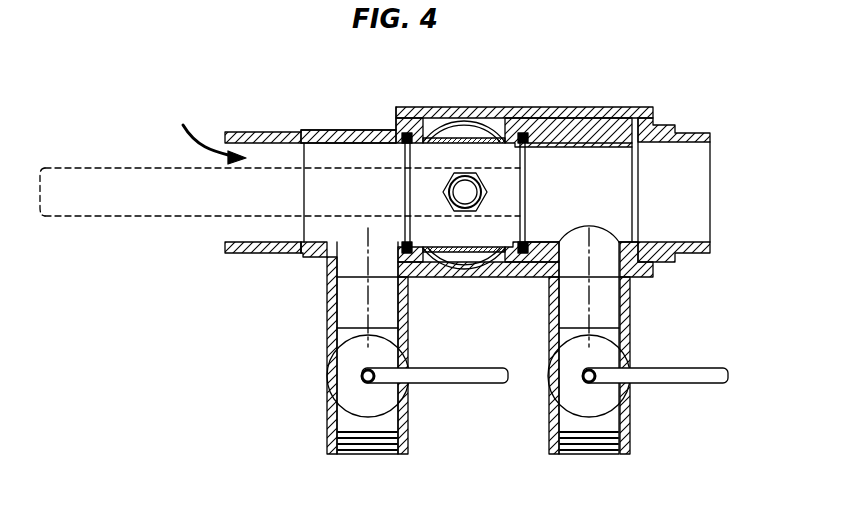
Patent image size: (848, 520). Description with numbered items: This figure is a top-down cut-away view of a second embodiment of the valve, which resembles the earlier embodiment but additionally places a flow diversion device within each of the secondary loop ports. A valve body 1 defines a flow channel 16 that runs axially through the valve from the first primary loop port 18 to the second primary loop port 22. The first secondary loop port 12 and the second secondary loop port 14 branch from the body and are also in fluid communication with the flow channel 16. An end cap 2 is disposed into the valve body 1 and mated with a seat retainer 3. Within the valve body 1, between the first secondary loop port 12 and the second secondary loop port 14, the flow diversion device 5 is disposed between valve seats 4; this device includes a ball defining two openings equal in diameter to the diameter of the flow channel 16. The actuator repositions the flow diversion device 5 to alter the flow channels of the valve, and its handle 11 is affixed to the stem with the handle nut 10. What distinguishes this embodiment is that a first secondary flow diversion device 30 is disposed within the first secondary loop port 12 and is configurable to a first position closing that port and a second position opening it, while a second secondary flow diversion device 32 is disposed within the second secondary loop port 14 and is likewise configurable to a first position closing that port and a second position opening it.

The valve body 1 is at (272, 132).
The end cap 2 is at (658, 126).
The seat retainer 3 is at (612, 108).
The valve seats 4 is at (420, 138).
The flow diversion device 5 is at (402, 124).
The handle nut 10 is at (482, 182).
The handle 11 is at (108, 220).
The first secondary loop port 12 is at (630, 306).
The second secondary loop port 14 is at (327, 302).
The flow channel 16 is at (207, 133).
The first primary loop port 18 is at (704, 236).
The second primary loop port 22 is at (248, 238).
The first secondary flow diversion device 30 is at (601, 400).
The second secondary flow diversion device 32 is at (380, 400).